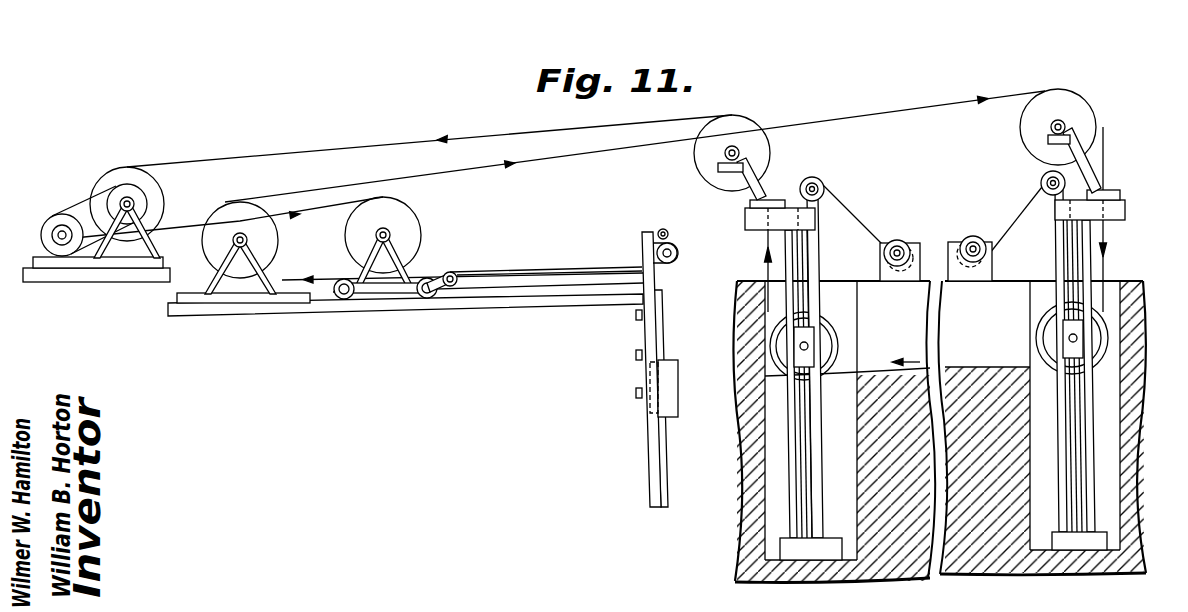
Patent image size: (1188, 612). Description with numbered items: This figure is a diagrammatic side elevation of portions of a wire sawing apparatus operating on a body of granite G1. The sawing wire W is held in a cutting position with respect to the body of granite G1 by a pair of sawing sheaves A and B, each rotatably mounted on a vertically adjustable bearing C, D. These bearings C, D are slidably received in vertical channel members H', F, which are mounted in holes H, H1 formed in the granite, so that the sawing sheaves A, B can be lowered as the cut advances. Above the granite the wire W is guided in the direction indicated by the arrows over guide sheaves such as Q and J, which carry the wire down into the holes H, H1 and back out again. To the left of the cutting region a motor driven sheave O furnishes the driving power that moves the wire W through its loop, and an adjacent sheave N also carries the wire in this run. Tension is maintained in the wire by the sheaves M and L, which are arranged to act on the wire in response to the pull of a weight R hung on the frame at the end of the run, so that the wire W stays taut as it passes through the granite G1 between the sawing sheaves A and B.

The wire W is at (836, 116).
The guide roller N is at (153, 193).
The motor driven sheave O is at (147, 208).
The sheave M is at (273, 242).
The sheave L is at (410, 222).
The weight R is at (667, 384).
The sheave Q is at (757, 158).
The sheave J is at (1088, 122).
The sawing sheave A is at (770, 347).
The vertically adjustable bearing C is at (794, 356).
The body of granite G1 is at (750, 443).
The hole H is at (780, 420).
The vertical channel member H' is at (821, 384).
The sawing sheave B is at (1108, 341).
The vertically adjustable bearing D is at (1078, 352).
The vertical channel member F is at (1088, 450).
The hole H1 is at (1112, 497).